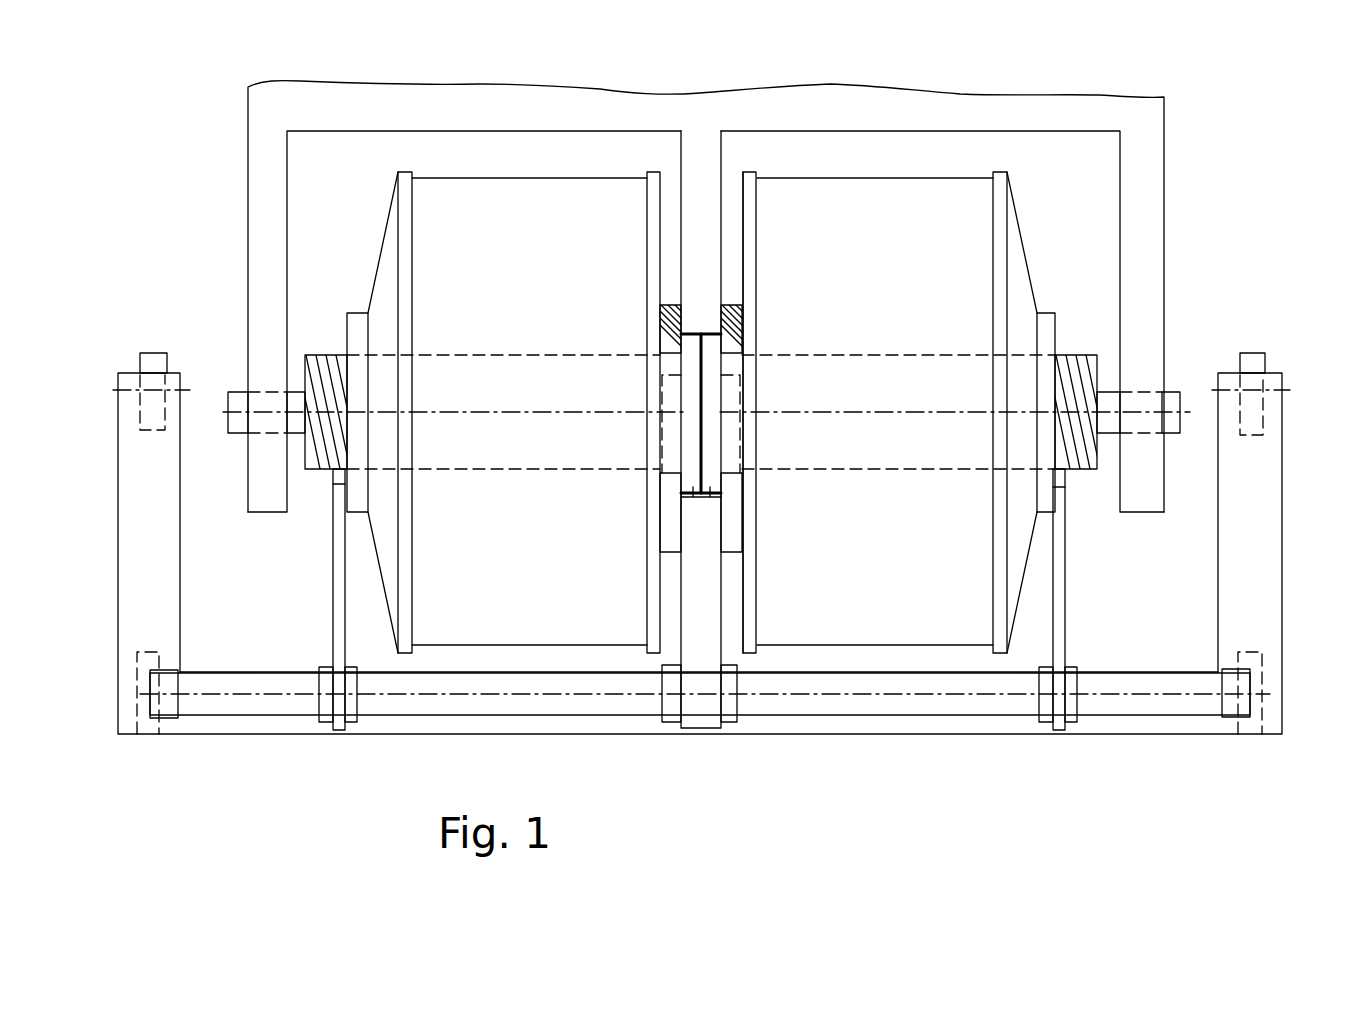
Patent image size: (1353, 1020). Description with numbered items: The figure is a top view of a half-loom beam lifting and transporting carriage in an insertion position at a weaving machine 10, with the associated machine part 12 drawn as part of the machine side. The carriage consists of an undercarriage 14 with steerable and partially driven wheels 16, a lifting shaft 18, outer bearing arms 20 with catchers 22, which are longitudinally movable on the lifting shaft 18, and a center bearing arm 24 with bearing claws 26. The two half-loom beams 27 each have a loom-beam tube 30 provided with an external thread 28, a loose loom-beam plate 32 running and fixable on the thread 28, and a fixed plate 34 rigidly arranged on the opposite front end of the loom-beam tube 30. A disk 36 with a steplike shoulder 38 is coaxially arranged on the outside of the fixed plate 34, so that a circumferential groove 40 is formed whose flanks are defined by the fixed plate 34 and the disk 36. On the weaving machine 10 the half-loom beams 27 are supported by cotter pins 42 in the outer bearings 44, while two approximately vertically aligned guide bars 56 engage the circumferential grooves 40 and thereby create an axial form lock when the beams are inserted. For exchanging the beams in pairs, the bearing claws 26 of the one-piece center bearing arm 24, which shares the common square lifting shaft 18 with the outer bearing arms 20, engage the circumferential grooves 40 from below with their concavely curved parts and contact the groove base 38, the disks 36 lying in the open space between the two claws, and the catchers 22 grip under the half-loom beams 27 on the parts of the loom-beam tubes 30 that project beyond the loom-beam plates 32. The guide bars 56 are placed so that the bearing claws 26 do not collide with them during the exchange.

The weaving machine 10 is at (729, 523).
The frame 12 is at (1136, 207).
The undercarriage 14 is at (1243, 508).
The wheels 16 is at (1256, 375).
The lifting shaft 18 is at (1130, 695).
The outer bearing arms 20 is at (676, 637).
The catchers 22 is at (333, 478).
The center bearing arm 24 is at (707, 622).
The bearing claws 26 is at (668, 443).
The half-loom beams 27 is at (742, 333).
The external thread 28 is at (707, 398).
The loom-beam tube 30 is at (325, 356).
The loose loom-beam plate 32 is at (1018, 270).
The fixed plate 34 is at (752, 230).
The disk 36 is at (712, 367).
The steplike shoulder 38 is at (733, 452).
The circumferential groove 40 is at (668, 475).
The cotter pins 42 is at (234, 400).
The outer bearings 44 is at (263, 418).
The guide bars 56 is at (662, 318).